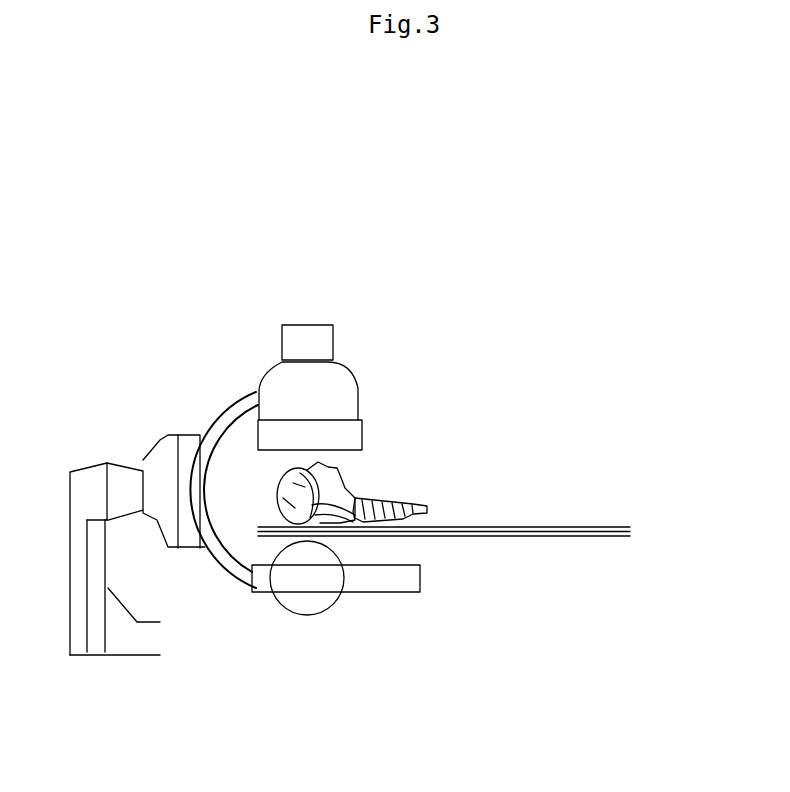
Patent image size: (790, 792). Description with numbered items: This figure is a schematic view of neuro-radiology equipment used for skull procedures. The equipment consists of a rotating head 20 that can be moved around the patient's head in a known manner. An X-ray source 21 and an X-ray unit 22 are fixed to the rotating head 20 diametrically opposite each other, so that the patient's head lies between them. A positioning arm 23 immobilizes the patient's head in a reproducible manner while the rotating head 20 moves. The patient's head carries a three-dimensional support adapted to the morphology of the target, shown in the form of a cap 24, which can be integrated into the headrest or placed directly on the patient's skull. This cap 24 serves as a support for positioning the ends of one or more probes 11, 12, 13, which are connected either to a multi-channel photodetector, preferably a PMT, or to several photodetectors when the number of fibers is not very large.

The probe 11 is at (363, 522).
The probe 12 is at (358, 500).
The probe 13 is at (335, 492).
The rotating head 20 is at (238, 405).
The X-ray source 21 is at (318, 603).
The X-ray unit 22 is at (304, 410).
The positioning arm 23 is at (153, 490).
The cap 24 is at (280, 492).